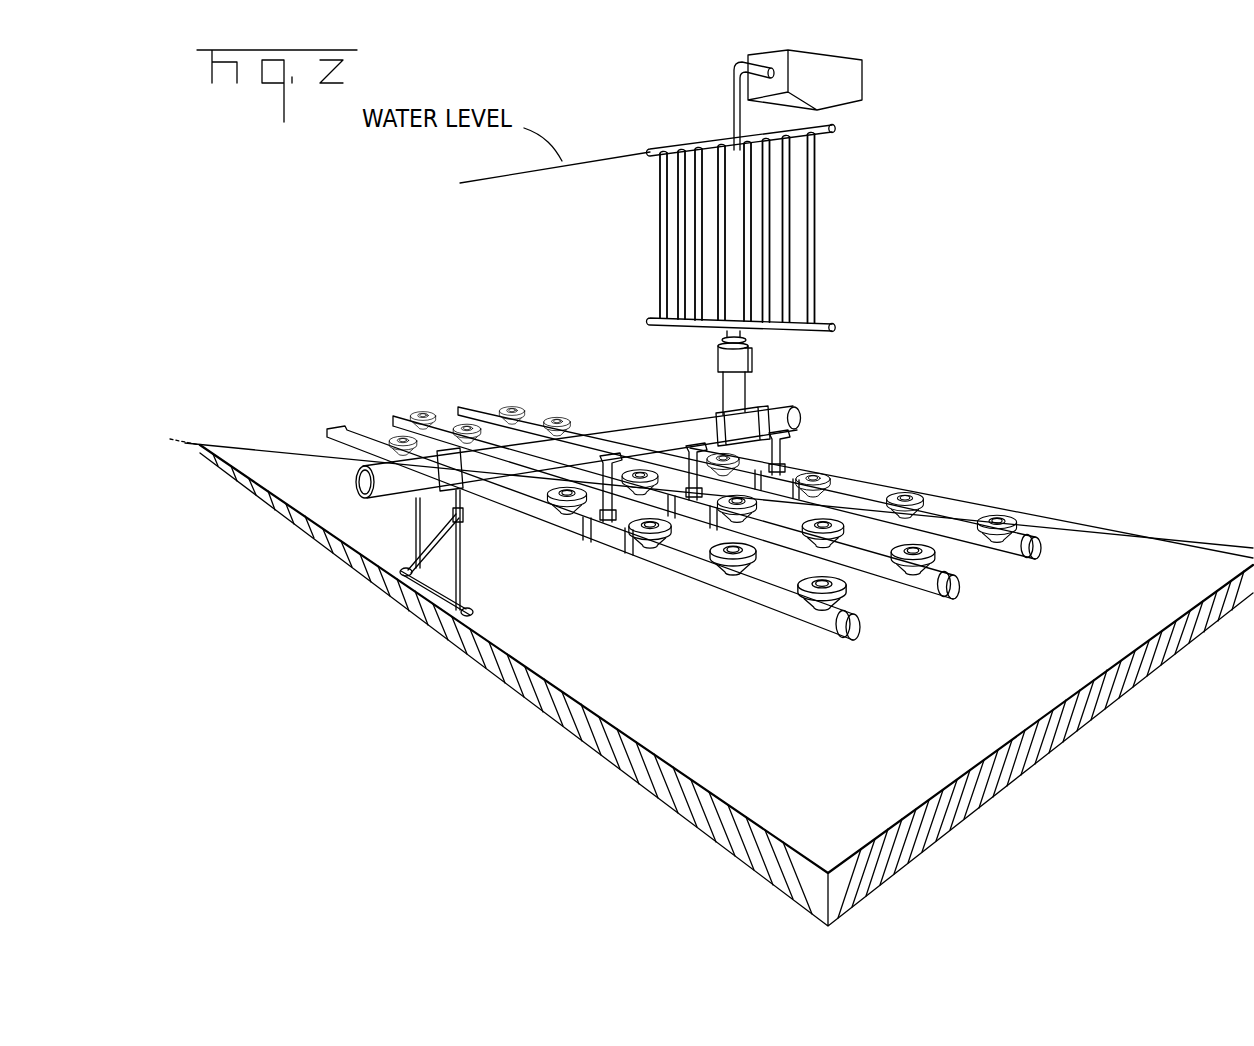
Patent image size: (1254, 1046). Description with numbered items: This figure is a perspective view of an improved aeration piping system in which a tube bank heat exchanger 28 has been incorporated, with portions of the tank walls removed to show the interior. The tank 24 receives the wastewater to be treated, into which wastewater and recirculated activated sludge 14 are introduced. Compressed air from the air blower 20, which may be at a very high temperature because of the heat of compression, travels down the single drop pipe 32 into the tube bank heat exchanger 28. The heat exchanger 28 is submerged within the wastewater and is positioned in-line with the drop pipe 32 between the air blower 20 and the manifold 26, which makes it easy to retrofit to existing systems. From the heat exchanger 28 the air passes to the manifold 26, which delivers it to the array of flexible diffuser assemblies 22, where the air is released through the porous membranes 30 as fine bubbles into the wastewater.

The recirculated activated sludge 14 is at (752, 605).
The air blower 20 is at (812, 62).
The diffuser assemblies 22 is at (556, 497).
The tank 24 is at (578, 634).
The manifold 26 is at (548, 442).
The tube bank heat exchanger 28 is at (840, 182).
The porous membranes 30 is at (823, 472).
The single drop pipe 32 is at (735, 103).